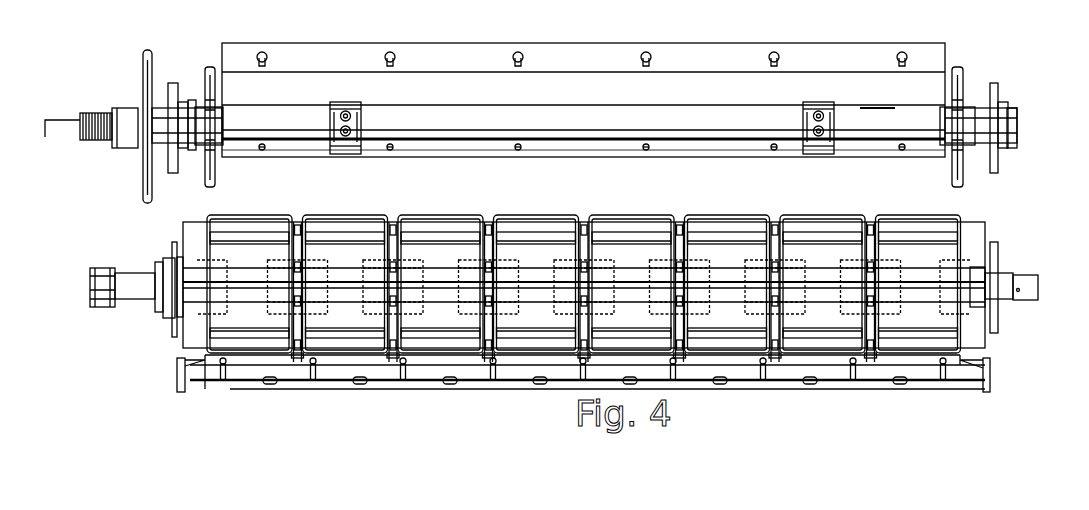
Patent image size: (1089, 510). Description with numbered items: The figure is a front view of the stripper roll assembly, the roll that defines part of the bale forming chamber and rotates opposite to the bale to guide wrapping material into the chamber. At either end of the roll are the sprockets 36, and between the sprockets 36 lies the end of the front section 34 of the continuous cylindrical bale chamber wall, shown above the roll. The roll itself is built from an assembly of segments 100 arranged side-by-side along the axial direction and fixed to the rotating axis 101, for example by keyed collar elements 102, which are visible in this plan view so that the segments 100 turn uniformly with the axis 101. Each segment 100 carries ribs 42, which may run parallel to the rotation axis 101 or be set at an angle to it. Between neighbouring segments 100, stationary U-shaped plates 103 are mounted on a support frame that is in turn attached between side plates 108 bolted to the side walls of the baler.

The front section 34 is at (680, 58).
The sprockets 36 is at (217, 168).
The ribs 42 is at (727, 238).
The segments 100 is at (245, 312).
The rotating axis 101 is at (1027, 285).
The keyed collar elements 102 is at (603, 270).
The U-shaped plates 103 is at (870, 348).
The side plates 108 is at (181, 372).